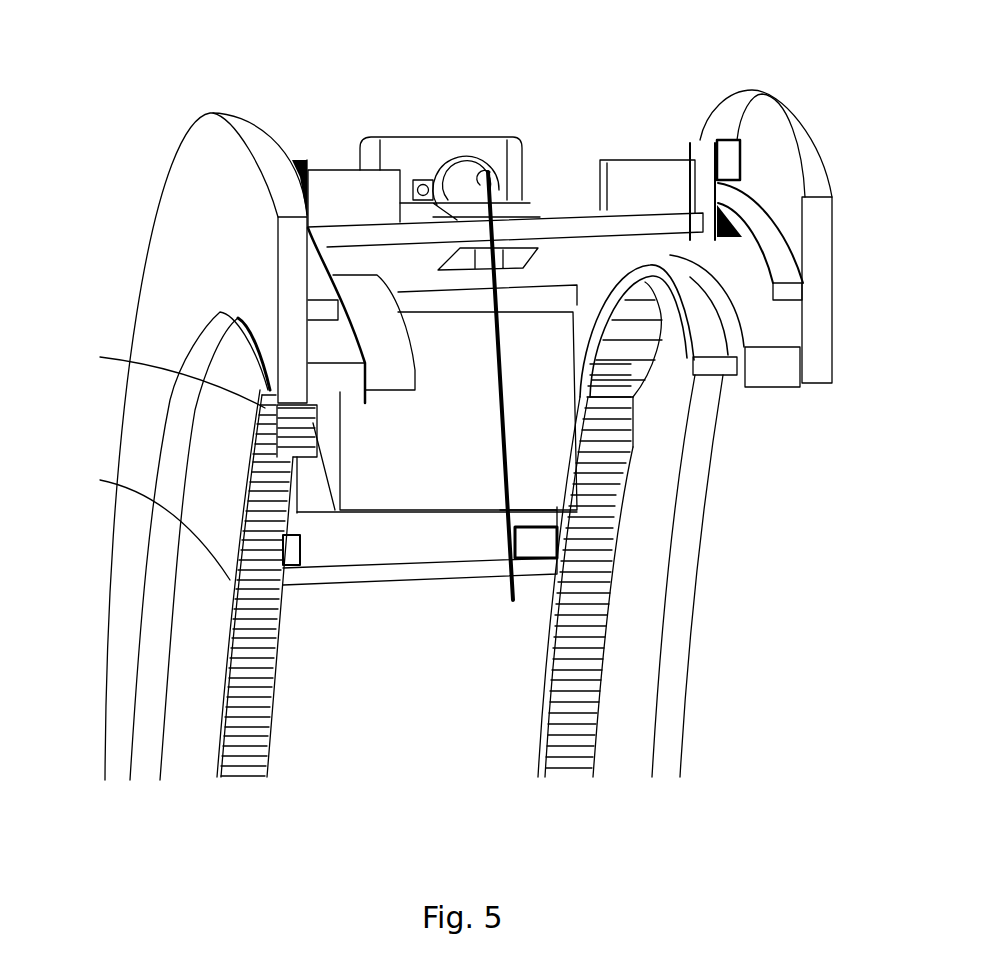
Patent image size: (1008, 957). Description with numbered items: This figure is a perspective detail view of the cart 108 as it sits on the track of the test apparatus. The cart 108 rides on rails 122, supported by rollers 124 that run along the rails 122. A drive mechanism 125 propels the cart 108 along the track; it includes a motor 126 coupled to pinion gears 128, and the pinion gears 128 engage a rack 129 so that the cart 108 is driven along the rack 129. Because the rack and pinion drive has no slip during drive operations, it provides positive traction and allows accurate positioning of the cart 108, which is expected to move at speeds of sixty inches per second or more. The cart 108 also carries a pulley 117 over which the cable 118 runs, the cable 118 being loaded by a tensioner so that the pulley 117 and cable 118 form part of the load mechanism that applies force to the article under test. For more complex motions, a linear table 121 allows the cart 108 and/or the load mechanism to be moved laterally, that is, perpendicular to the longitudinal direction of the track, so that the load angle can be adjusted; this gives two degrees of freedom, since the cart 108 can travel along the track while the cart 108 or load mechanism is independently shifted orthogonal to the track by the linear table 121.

The cart 108 is at (345, 167).
The pulley 117 is at (516, 140).
The cable 118 is at (512, 515).
The linear table 121 is at (563, 225).
The rails 122 is at (753, 207).
The rollers 124 is at (737, 140).
The drive mechanism 125 is at (728, 665).
The motor 126 is at (391, 515).
The pinion gears 128 is at (268, 405).
The rack 129 is at (240, 545).